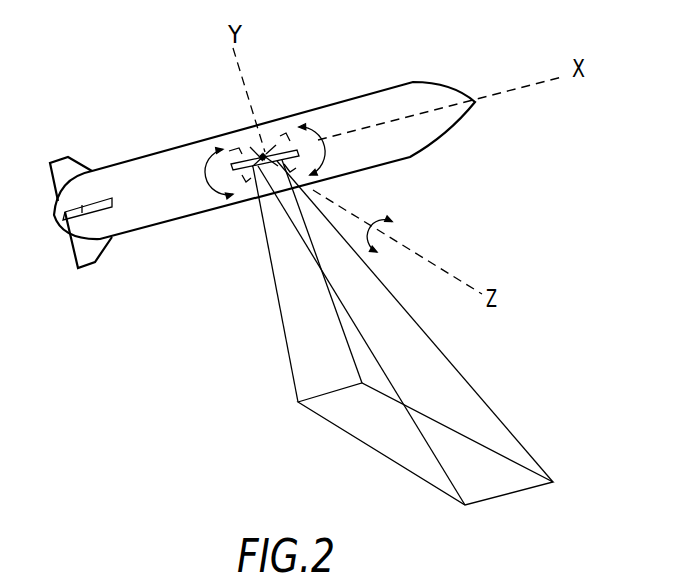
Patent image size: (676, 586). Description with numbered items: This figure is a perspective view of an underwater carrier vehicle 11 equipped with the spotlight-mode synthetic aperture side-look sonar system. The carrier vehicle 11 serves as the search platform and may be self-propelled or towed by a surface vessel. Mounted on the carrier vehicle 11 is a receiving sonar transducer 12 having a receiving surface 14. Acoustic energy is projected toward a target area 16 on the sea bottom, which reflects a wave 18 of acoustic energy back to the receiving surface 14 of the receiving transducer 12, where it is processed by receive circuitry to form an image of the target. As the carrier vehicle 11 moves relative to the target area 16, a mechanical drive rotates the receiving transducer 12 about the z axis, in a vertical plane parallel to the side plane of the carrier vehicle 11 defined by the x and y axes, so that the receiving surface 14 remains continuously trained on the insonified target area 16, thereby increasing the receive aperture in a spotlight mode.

The underwater carrier vehicle 11 is at (178, 146).
The receiving sonar transducer 12 is at (284, 141).
The receiving surface 14 is at (245, 185).
The target area 16 is at (378, 440).
The wave of acoustic energy 18 is at (297, 320).